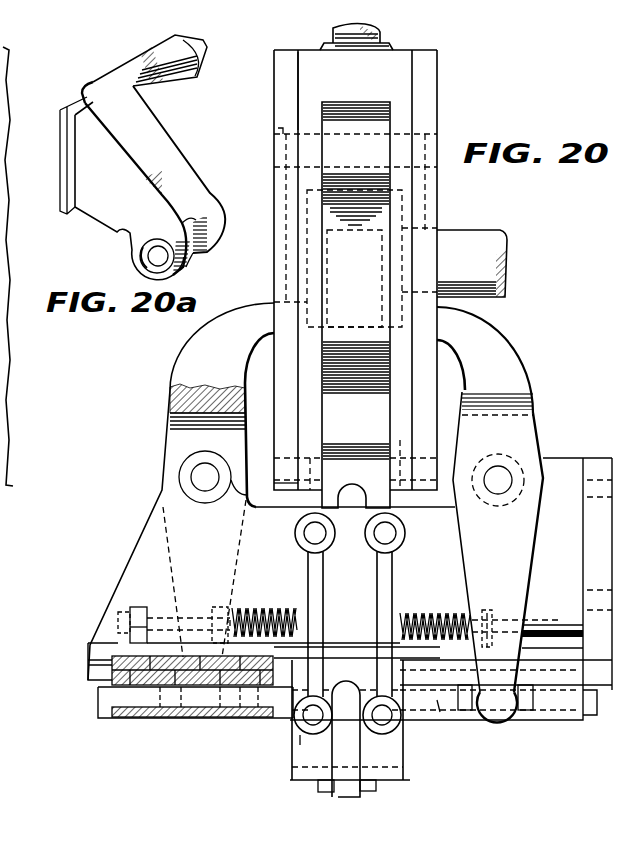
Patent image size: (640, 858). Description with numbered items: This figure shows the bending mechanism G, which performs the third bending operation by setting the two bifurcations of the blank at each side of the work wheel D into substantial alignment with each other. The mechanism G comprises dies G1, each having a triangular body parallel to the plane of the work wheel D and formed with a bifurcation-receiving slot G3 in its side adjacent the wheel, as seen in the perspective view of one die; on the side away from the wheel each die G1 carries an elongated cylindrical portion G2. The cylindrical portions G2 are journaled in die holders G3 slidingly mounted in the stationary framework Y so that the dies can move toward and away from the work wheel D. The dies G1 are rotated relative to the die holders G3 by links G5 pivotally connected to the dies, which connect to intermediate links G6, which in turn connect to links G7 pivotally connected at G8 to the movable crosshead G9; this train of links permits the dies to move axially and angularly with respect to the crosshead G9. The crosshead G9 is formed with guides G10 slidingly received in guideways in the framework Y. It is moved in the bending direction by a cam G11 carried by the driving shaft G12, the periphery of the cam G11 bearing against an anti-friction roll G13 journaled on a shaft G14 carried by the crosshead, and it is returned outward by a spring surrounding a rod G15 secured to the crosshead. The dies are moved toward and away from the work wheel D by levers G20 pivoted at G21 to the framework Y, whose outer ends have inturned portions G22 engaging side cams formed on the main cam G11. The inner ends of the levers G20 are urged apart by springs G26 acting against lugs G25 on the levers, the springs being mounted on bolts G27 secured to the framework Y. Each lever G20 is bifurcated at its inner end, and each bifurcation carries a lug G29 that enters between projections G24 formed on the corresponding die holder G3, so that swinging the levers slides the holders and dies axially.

In FIG. 20, the bending mechanism G is at (327, 258).
In FIG. 20A, the die G1 is at (129, 191).
In FIG. 20, the die G1 is at (297, 738).
In FIG. 20A, the elongated cylindrical portion G2 is at (127, 62).
In FIG. 20, the elongated cylindrical portion G2 is at (437, 712).
In FIG. 20A, the die holder G3 is at (70, 139).
In FIG. 20, the die holder G3 is at (98, 662).
In FIG. 20, the link G5 is at (313, 742).
In FIG. 20, the intermediate link G6 is at (317, 583).
In FIG. 20, the link G7 is at (352, 436).
In FIG. 20, the pivot G8 is at (280, 497).
In FIG. 20, the movable crosshead G9 is at (283, 92).
In FIG. 20, the guide G10 is at (303, 62).
In FIG. 20, the cam G11 is at (356, 311).
In FIG. 20, the driving shaft G12 is at (472, 263).
In FIG. 20, the anti-friction roll G13 is at (345, 117).
In FIG. 20, the shaft G14 is at (278, 129).
In FIG. 20, the rod G15 is at (380, 33).
In FIG. 20, the lever G20 is at (168, 450).
In FIG. 20, the pivot G21 is at (200, 477).
In FIG. 20, the inturned portion G22 is at (351, 405).
In FIG. 20, the projection G24 is at (152, 717).
In FIG. 20, the lug G25 is at (215, 607).
In FIG. 20, the spring G26 is at (272, 596).
In FIG. 20, the bolt G27 is at (118, 615).
In FIG. 20, the lug G29 is at (197, 717).
In FIG. 20, the stationary framework Y is at (143, 553).
In FIG. 20, the work wheel D is at (350, 783).